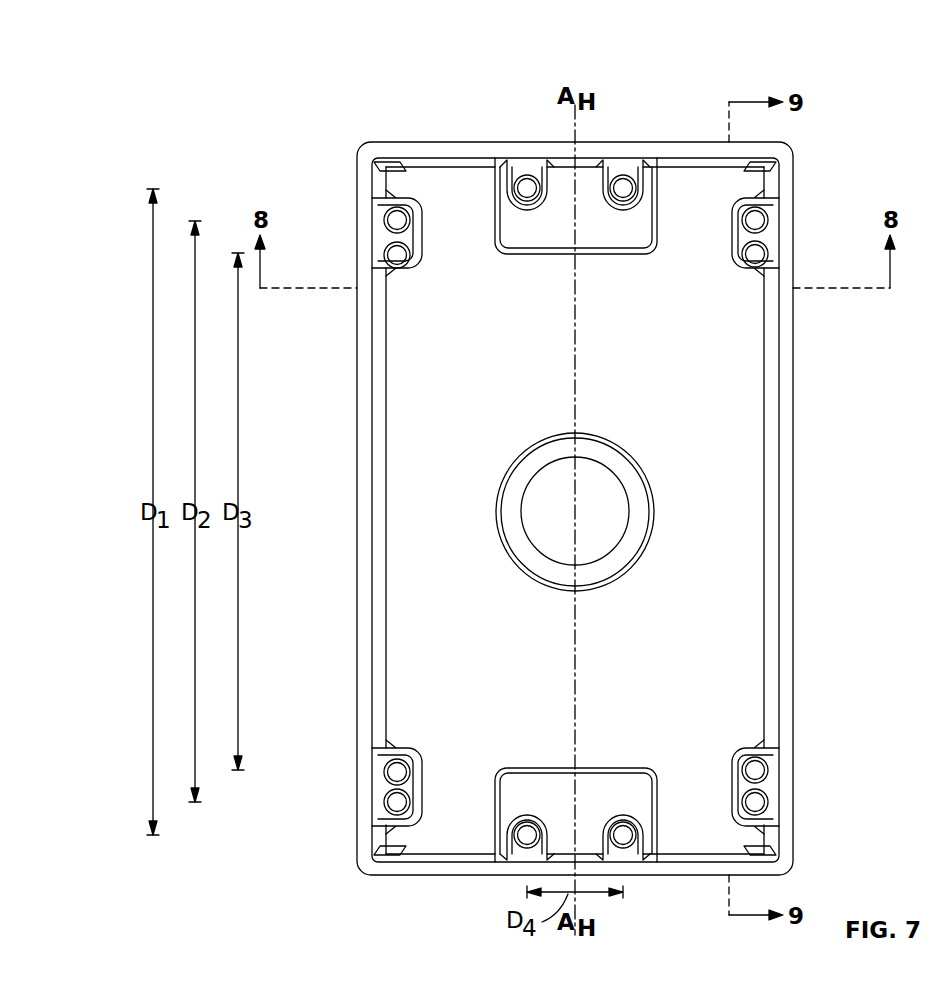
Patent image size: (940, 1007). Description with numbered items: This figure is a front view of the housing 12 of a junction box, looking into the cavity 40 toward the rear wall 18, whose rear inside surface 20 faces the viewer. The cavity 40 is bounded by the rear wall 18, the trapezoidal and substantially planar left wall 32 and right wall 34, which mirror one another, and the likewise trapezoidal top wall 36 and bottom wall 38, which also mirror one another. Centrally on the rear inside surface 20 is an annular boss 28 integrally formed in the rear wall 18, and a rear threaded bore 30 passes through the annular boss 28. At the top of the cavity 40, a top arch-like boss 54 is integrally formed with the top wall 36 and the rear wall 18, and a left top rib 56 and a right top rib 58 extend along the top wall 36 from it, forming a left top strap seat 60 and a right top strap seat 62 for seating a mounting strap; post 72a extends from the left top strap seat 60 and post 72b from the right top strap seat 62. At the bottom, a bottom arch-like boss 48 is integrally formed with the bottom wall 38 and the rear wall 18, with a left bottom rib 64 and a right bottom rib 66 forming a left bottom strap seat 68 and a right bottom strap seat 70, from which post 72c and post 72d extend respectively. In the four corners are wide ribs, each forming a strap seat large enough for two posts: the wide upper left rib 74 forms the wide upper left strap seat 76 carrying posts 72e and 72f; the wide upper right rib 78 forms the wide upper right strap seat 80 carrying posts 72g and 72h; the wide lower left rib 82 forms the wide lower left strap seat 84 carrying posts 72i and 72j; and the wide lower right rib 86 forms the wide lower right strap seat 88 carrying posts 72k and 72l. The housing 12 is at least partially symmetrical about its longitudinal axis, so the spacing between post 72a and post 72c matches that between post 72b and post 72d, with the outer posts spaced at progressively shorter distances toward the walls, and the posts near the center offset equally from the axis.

The housing 12 is at (211, 104).
The rear wall 18 is at (450, 548).
The rear inside surface 20 is at (425, 440).
The annular boss 28 is at (527, 464).
The rear threaded bore 30 is at (605, 541).
The left wall 32 is at (364, 663).
The right wall 34 is at (789, 604).
The top wall 36 is at (449, 150).
The bottom wall 38 is at (417, 874).
The cavity 40 is at (750, 527).
The bottom arch-like boss 48 is at (585, 790).
The top arch-like boss 54 is at (555, 252).
The left top rib 56 is at (548, 194).
The right top rib 58 is at (642, 190).
The left top strap seat 60 is at (518, 176).
The right top strap seat 62 is at (615, 177).
The left bottom rib 64 is at (500, 862).
The right bottom rib 66 is at (644, 850).
The left bottom strap seat 68 is at (521, 857).
The right bottom strap seat 70 is at (628, 857).
The post 72a is at (530, 185).
The post 72b is at (626, 185).
The post 72c is at (528, 833).
The post 72d is at (624, 833).
The post 72e is at (401, 258).
The post 72f is at (401, 224).
The post 72g is at (757, 255).
The post 72h is at (757, 222).
The post 72i is at (396, 804).
The post 72j is at (396, 771).
The post 72k is at (757, 803).
The post 72l is at (757, 770).
The wide upper left rib 74 is at (405, 202).
The wide upper left strap seat 76 is at (378, 218).
The wide upper right rib 78 is at (740, 200).
The wide upper right strap seat 80 is at (768, 236).
The wide lower left rib 82 is at (408, 750).
The wide lower left strap seat 84 is at (372, 782).
The wide lower right rib 86 is at (740, 752).
The wide lower right strap seat 88 is at (768, 811).